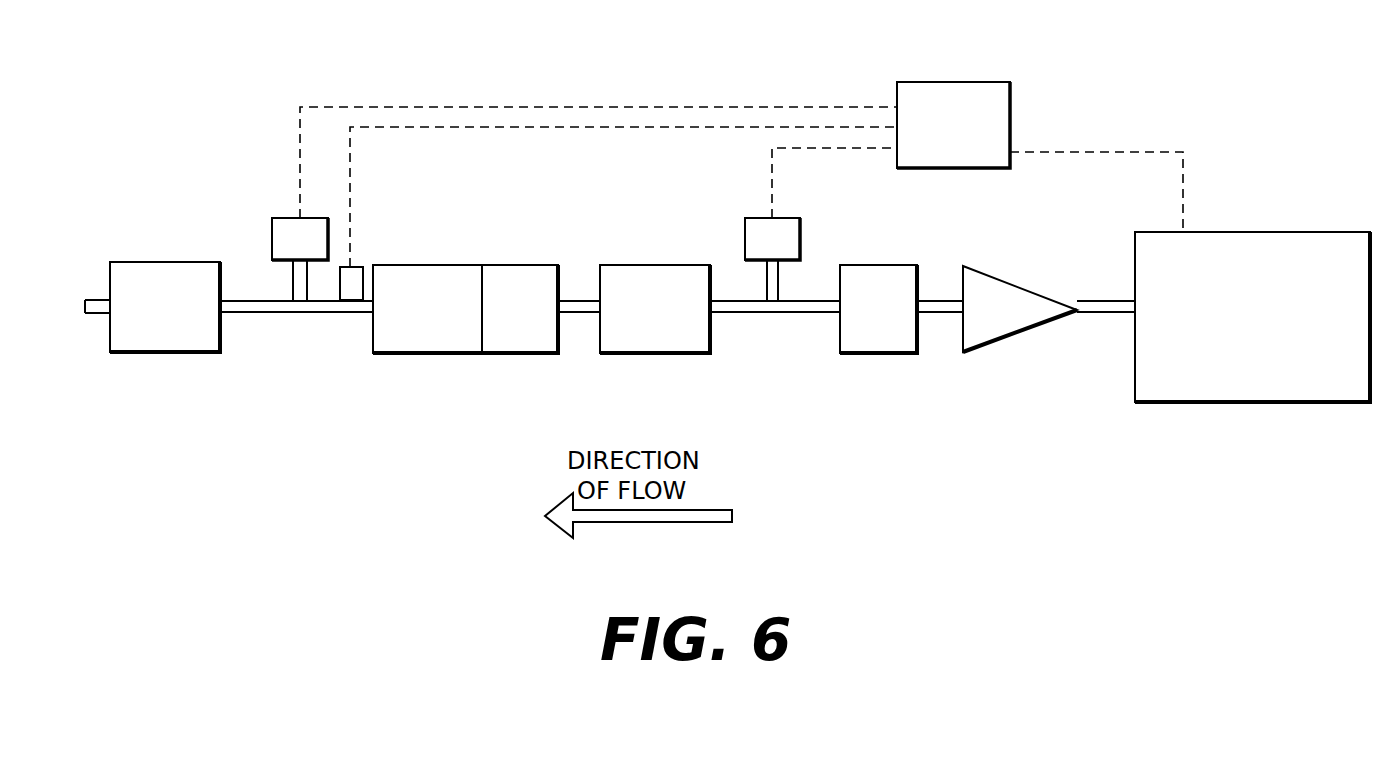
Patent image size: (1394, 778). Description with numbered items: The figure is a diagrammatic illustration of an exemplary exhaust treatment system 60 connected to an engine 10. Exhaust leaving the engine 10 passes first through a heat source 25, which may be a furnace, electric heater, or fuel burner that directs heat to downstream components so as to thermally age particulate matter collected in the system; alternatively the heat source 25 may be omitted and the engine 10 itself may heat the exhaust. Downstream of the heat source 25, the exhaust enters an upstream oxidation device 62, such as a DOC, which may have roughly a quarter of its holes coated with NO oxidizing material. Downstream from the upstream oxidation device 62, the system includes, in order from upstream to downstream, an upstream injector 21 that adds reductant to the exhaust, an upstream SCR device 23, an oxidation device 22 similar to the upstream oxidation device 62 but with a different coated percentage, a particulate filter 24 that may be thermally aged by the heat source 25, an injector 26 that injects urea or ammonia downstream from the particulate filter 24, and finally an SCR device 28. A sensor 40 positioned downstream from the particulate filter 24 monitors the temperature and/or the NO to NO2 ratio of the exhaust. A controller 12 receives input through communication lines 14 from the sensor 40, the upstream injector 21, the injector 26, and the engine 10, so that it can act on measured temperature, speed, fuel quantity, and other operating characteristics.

The exhaust treatment system 60 is at (168, 118).
The SCR device 28 is at (155, 262).
The injector 26 is at (276, 218).
The sensor 40 is at (353, 267).
The particulate filter 24 is at (410, 265).
The oxidation device 22 is at (513, 265).
The upstream SCR device 23 is at (632, 265).
The upstream injector 21 is at (786, 218).
The upstream oxidation device 62 is at (887, 265).
The heat source 25 is at (1013, 286).
The engine 10 is at (1250, 232).
The controller 12 is at (970, 82).
The communication lines 14 is at (716, 107).